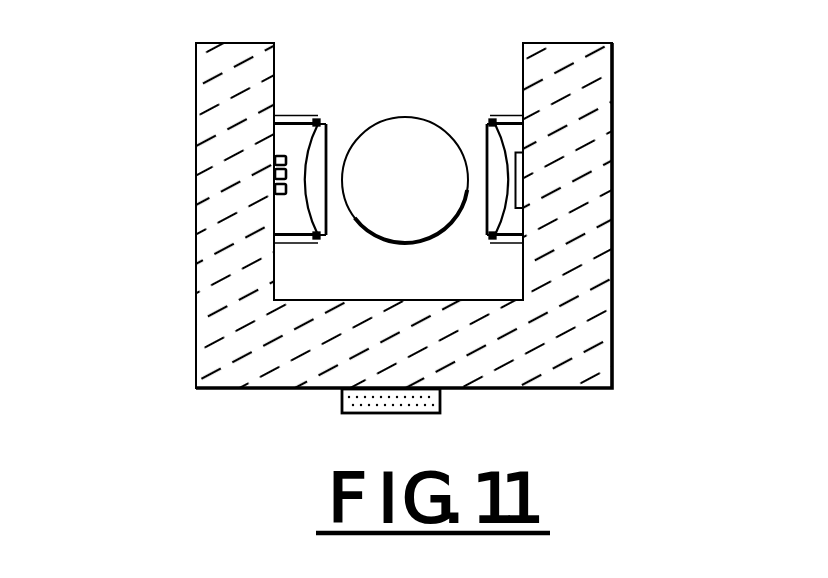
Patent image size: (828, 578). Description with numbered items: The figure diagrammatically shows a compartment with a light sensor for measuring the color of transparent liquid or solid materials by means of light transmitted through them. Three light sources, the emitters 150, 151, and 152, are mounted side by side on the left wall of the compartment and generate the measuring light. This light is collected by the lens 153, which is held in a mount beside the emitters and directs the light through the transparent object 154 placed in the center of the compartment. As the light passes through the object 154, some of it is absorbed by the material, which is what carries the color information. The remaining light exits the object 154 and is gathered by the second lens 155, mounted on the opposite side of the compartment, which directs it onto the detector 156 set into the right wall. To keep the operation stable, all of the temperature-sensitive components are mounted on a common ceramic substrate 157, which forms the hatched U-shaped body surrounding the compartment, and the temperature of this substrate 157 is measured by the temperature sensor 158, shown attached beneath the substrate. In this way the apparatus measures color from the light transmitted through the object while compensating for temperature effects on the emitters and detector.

The emitter 150 is at (275, 160).
The emitter 151 is at (275, 175).
The emitter 152 is at (275, 190).
The lens 153 is at (326, 216).
The object 154 is at (413, 117).
The lens 155 is at (487, 216).
The detector 156 is at (521, 167).
The ceramic substrate 157 is at (614, 365).
The temperature sensor 158 is at (440, 408).